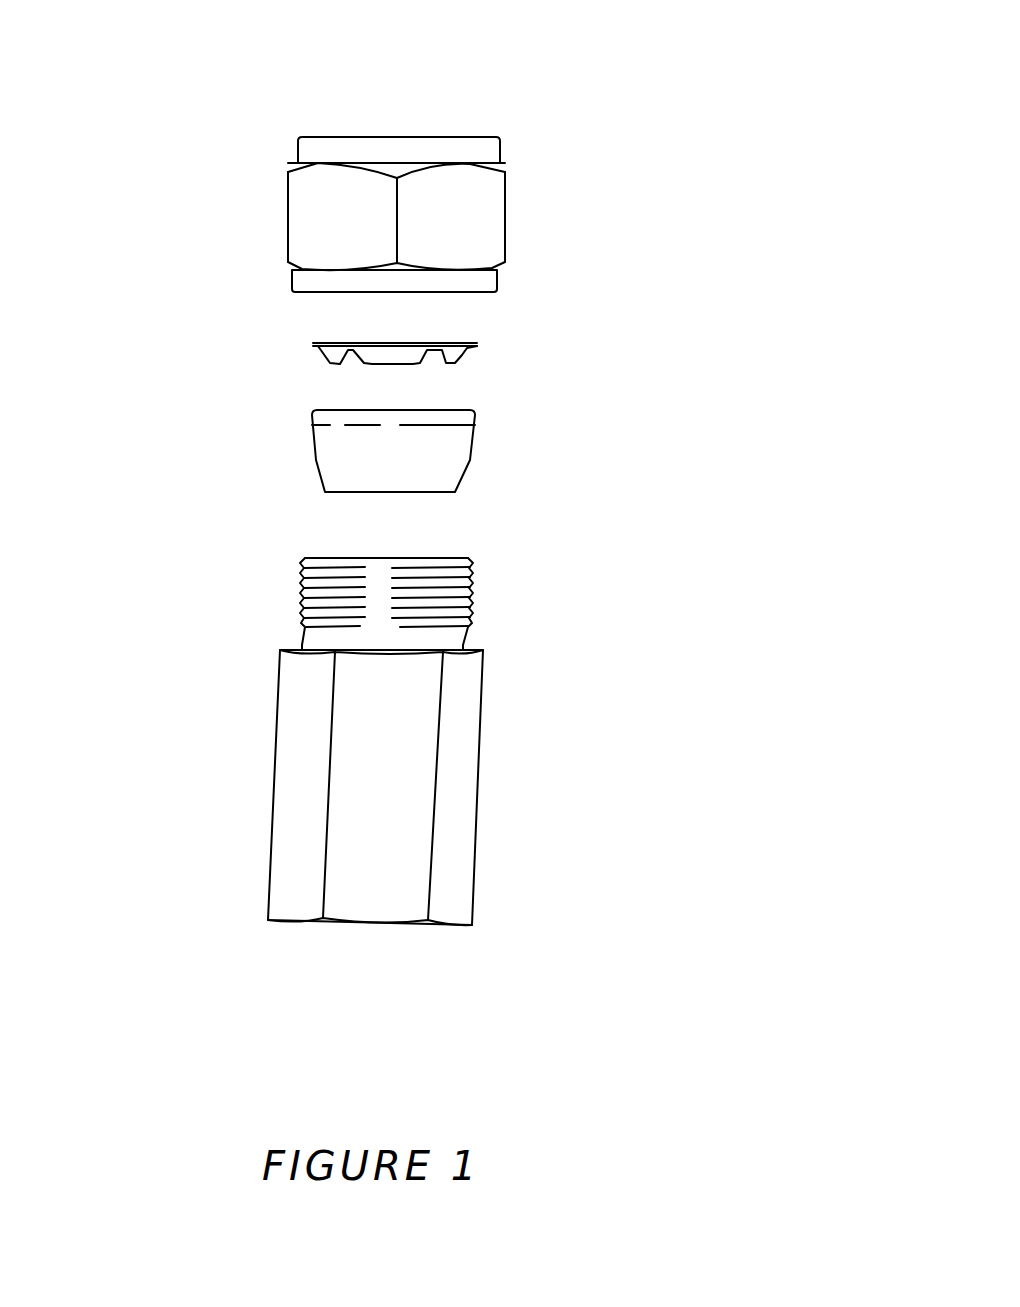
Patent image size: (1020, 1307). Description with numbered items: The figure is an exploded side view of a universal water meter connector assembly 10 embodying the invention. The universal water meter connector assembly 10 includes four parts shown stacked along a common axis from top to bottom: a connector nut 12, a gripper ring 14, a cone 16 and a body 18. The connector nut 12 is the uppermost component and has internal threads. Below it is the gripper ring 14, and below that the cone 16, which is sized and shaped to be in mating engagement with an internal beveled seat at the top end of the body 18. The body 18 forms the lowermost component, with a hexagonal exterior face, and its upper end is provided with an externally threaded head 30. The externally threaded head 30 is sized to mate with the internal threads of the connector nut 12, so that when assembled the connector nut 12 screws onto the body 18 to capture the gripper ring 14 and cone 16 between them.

The universal water meter connector assembly 10 is at (713, 121).
The connector nut 12 is at (505, 215).
The gripper ring 14 is at (317, 345).
The cone 16 is at (475, 455).
The body 18 is at (481, 820).
The externally threaded head 30 is at (503, 599).